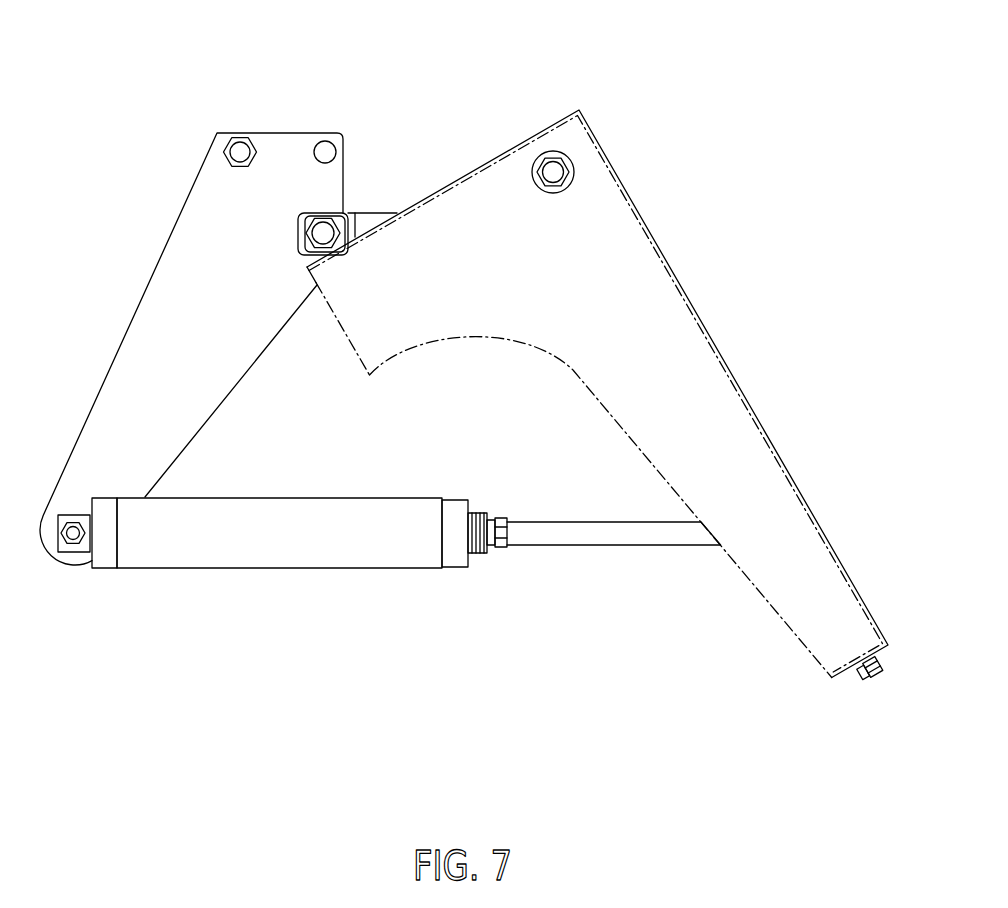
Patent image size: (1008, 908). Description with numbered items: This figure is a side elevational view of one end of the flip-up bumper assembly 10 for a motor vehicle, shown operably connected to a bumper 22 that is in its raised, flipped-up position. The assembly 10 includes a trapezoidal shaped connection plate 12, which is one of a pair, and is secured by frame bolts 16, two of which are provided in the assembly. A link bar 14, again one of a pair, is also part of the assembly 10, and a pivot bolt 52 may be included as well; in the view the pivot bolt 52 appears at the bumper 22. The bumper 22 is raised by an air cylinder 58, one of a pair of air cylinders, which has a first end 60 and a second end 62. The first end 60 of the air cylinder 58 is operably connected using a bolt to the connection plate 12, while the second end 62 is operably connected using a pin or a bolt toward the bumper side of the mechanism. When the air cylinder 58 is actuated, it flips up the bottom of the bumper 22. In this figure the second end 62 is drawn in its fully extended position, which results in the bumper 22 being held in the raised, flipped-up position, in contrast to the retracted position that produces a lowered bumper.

The flip-up bumper assembly 10 is at (462, 87).
The connection plate 12 is at (147, 337).
The link bar 14 is at (366, 212).
The frame bolt 16 is at (239, 144).
The bumper 22 is at (718, 320).
The pivot bolt 52 is at (556, 171).
The air cylinder 58 is at (257, 548).
The first end 60 is at (73, 552).
The second end 62 is at (688, 548).